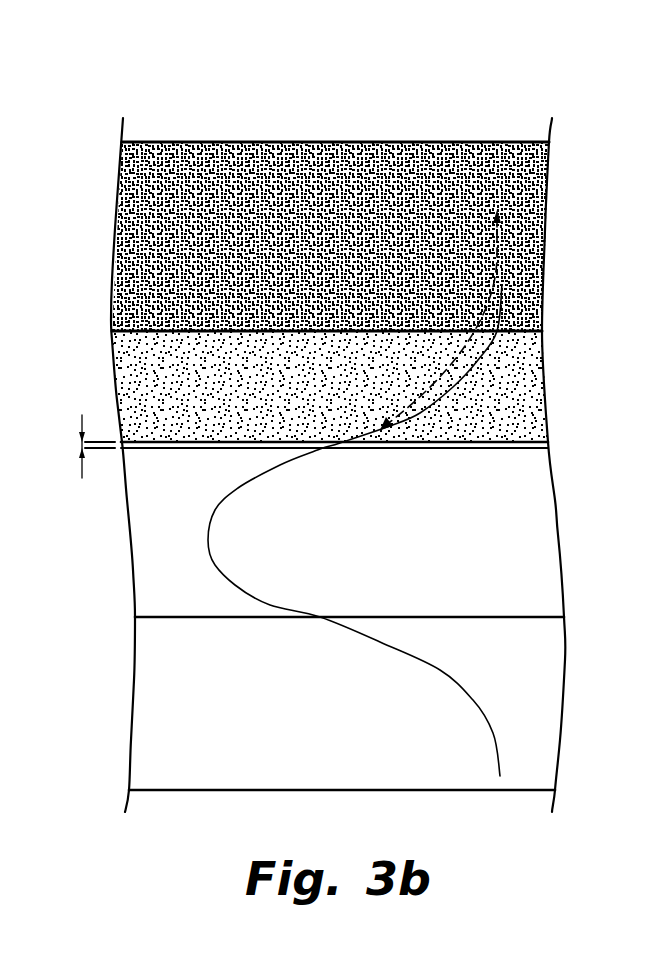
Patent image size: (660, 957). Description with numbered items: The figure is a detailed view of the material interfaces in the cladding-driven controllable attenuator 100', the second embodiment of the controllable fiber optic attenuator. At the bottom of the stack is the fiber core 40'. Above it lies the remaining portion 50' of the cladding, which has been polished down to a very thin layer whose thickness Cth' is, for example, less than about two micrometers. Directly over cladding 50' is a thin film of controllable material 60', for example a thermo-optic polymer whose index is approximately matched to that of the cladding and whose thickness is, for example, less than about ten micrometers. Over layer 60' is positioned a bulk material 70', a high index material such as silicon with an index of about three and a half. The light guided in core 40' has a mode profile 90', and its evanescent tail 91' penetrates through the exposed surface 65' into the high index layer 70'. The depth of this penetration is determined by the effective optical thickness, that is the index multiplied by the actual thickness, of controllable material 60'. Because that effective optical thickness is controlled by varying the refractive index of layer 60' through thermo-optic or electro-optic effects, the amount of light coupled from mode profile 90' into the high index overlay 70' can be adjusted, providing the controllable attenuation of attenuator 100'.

The cladding-driven controllable attenuator 100' is at (338, 425).
The bulk material 70' is at (382, 236).
The controllable material 60' is at (382, 386).
The remaining portion of the cladding 50' is at (387, 449).
The fiber core 40' is at (391, 656).
The exposed surface 65' is at (197, 468).
The mode profile 90' is at (355, 530).
The evanescent tail 91' is at (440, 320).
The thickness of the remaining cladding portion Cth' is at (69, 446).